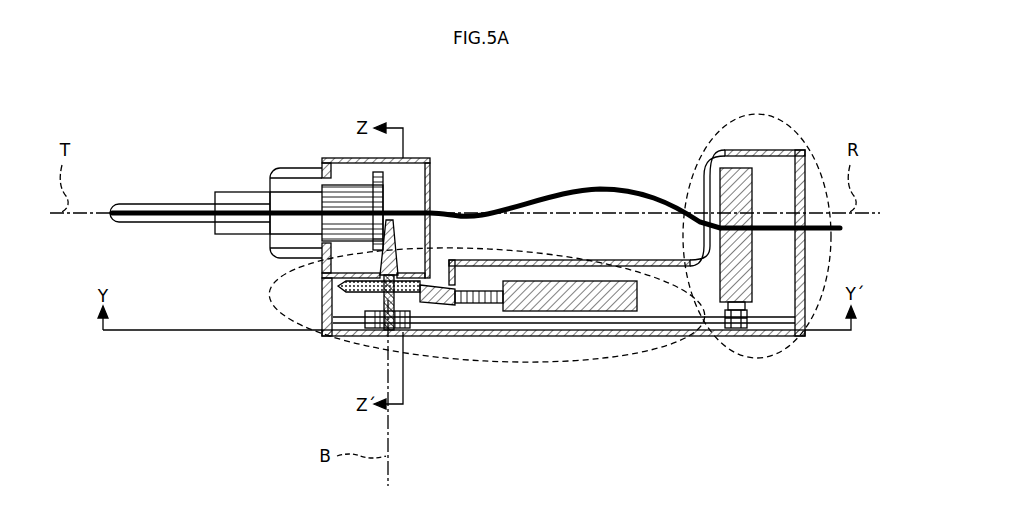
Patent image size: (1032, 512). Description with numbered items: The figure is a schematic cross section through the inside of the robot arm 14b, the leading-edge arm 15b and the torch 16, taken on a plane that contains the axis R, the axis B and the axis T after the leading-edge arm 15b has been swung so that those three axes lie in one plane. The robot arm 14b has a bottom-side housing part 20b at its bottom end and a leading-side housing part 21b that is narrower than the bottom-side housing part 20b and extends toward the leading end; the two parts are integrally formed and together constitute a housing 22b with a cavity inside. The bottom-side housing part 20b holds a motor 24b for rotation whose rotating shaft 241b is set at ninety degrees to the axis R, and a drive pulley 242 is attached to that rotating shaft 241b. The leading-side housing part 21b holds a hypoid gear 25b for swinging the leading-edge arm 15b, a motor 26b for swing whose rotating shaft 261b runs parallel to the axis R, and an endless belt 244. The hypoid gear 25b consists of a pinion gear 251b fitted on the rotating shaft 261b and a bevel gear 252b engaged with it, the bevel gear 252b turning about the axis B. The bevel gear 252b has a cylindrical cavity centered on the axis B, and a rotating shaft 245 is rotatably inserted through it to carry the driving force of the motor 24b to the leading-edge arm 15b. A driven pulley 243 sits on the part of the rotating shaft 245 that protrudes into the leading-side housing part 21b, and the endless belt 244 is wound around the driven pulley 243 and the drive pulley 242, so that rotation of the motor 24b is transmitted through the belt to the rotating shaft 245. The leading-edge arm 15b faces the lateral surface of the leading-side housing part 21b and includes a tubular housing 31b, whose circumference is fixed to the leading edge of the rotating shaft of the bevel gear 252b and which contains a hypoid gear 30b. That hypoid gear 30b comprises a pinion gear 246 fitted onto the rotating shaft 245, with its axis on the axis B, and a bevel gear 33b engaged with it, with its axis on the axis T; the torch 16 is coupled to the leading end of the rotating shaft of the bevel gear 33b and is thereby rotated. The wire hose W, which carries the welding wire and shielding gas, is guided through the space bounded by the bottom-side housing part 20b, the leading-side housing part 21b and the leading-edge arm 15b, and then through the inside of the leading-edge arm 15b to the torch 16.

The leading-edge arm 15b is at (322, 100).
The torch 16 is at (236, 192).
The tubular housing 31b is at (333, 158).
The bevel gear 33b is at (383, 180).
The pinion gear 246 is at (391, 237).
The hypoid gear 30b is at (494, 138).
The robot arm 14b is at (558, 134).
The wire hose W is at (592, 188).
The motor for rotation 24b is at (730, 167).
The bottom-side housing part 20b is at (786, 125).
The housing 22b is at (806, 178).
The rotating shaft 241b is at (745, 307).
The rotating shaft 245 is at (356, 296).
The driven pulley 243 is at (375, 328).
The bevel gear 252b is at (420, 290).
The pinion gear 251b is at (455, 305).
The rotating shaft 261b is at (495, 303).
The motor for swing 26b is at (600, 312).
The endless belt 244 is at (665, 323).
The drive pulley 242 is at (738, 328).
The leading-side housing part 21b is at (573, 358).
The hypoid gear 25b is at (397, 440).